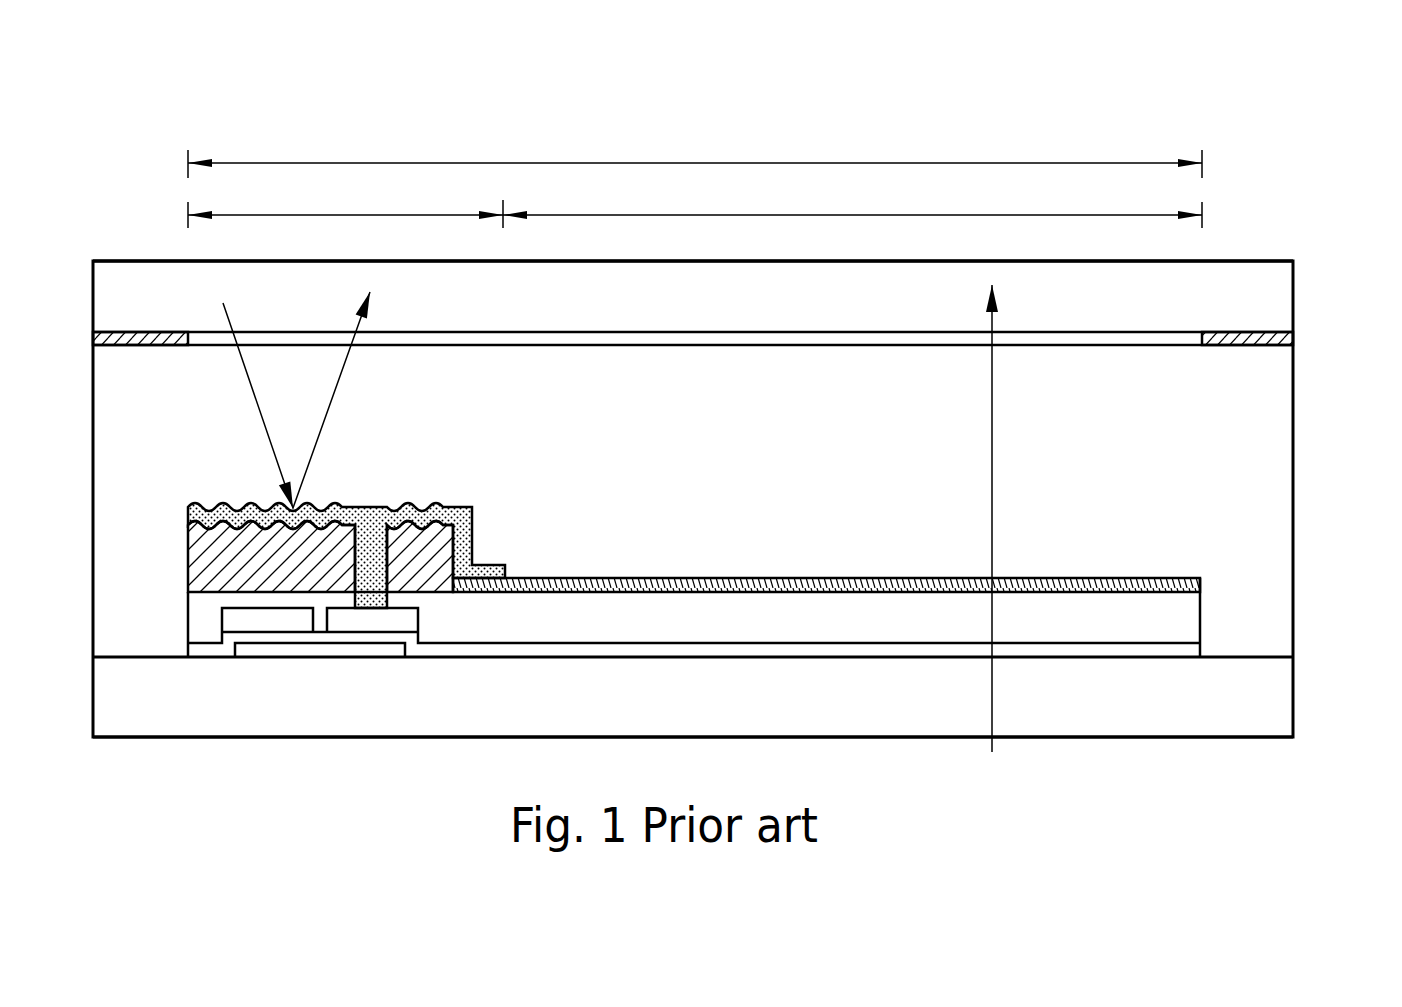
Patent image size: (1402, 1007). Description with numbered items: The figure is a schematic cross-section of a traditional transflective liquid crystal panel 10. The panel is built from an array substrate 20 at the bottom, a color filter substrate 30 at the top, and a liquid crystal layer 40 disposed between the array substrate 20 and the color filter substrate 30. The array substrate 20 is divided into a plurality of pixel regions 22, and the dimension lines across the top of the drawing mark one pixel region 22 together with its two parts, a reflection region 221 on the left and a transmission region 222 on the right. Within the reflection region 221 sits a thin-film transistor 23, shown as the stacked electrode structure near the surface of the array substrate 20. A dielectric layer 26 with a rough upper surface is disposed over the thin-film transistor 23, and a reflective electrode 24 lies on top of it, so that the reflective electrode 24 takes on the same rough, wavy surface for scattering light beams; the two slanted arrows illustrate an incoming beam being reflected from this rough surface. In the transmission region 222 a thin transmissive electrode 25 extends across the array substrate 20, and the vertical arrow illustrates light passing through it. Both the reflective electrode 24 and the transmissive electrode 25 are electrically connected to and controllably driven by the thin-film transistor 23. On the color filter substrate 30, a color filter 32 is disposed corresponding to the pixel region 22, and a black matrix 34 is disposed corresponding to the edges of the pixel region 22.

The transflective liquid crystal panel 10 is at (1262, 124).
The array substrate 20 is at (826, 712).
The pixel region 22 is at (695, 151).
The reflection region 221 is at (345, 203).
The transmission region 222 is at (852, 203).
The thin-film transistor 23 is at (312, 657).
The reflective electrode 24 is at (200, 507).
The transmissive electrode 25 is at (1138, 578).
The dielectric layer 26 is at (285, 573).
The color filter substrate 30 is at (702, 313).
The color filter 32 is at (885, 337).
The black matrix 34 is at (1295, 338).
The liquid crystal layer 40 is at (1295, 465).